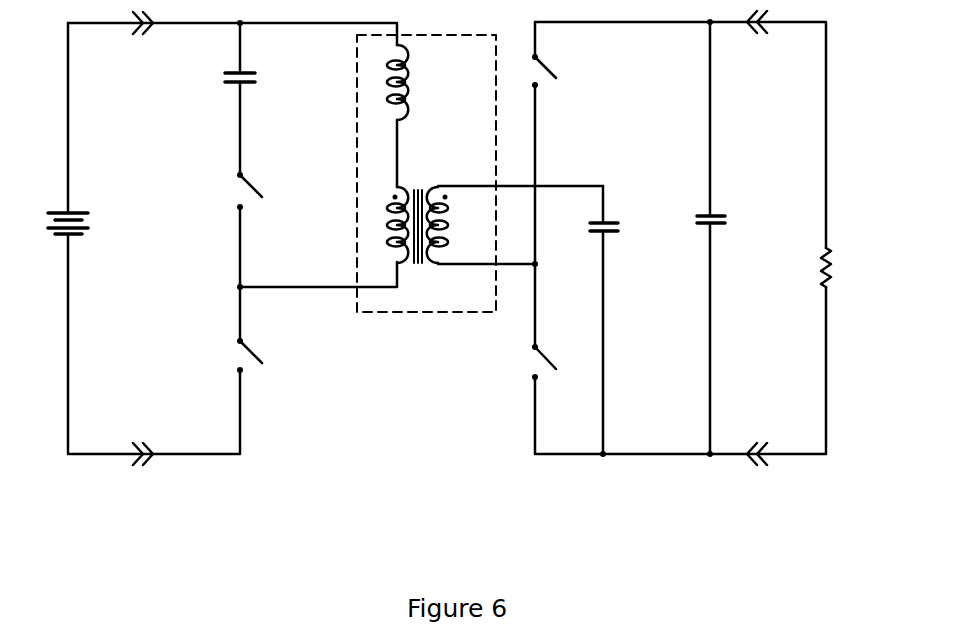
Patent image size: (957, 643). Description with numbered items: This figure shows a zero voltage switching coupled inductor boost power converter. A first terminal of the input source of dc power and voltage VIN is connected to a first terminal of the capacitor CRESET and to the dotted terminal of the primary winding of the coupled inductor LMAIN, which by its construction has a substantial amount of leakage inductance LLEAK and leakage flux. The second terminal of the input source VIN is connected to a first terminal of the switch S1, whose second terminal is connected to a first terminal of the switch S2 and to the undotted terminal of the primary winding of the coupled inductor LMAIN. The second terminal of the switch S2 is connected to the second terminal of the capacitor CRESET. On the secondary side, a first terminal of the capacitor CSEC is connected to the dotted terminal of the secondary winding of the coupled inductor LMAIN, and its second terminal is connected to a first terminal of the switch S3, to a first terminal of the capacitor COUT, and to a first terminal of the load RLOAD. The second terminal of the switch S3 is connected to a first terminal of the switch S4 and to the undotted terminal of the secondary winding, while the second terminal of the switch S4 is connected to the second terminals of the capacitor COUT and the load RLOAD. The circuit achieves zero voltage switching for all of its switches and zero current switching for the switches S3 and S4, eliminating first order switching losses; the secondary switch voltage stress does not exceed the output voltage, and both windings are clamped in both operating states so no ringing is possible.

The input source of dc power and voltage VIN is at (48, 224).
The capacitor C_RESET CRESET is at (275, 82).
The switch S1 is at (234, 355).
The switch S2 is at (234, 191).
The switch S3 is at (532, 362).
The switch S4 is at (532, 71).
The leakage inductance LLEAK is at (426, 82).
The coupled inductor L_MAIN LMAIN is at (420, 210).
The capacitor C_SEC CSEC is at (630, 232).
The capacitor C_OUT COUT is at (738, 224).
The load R_LOAD RLOAD is at (857, 268).